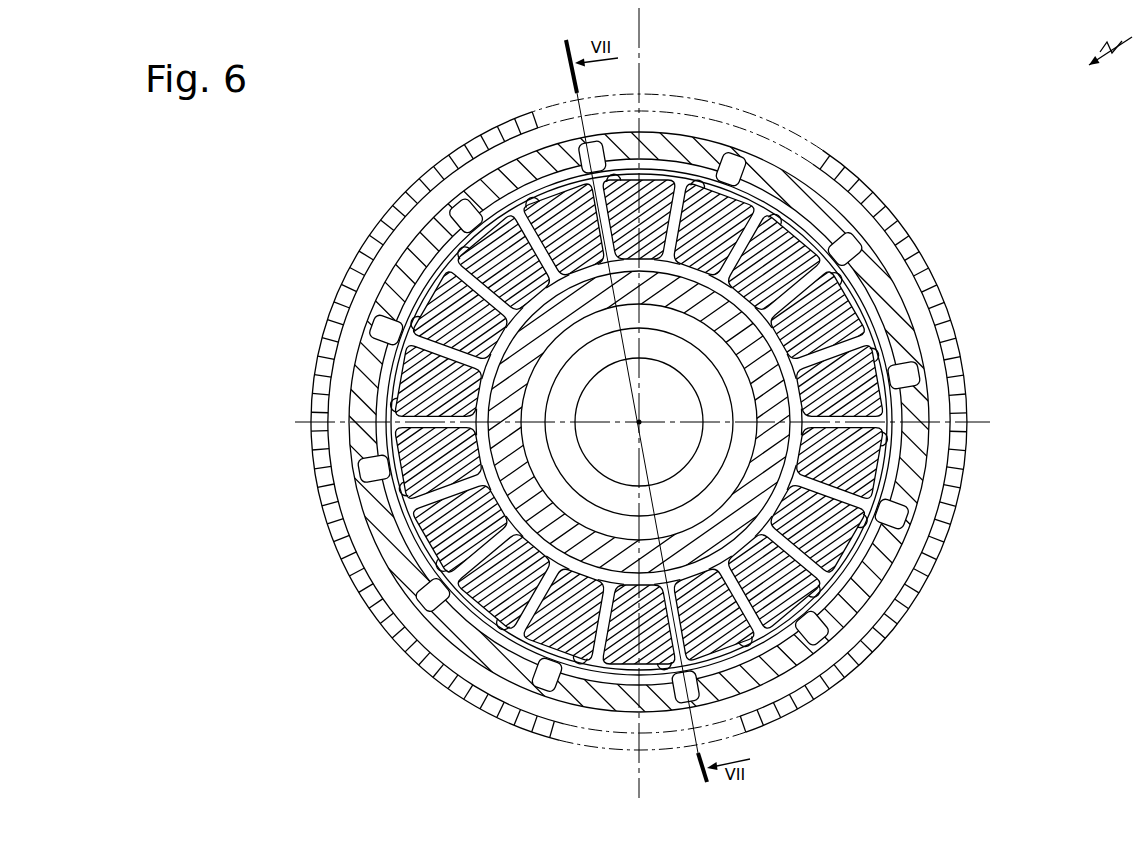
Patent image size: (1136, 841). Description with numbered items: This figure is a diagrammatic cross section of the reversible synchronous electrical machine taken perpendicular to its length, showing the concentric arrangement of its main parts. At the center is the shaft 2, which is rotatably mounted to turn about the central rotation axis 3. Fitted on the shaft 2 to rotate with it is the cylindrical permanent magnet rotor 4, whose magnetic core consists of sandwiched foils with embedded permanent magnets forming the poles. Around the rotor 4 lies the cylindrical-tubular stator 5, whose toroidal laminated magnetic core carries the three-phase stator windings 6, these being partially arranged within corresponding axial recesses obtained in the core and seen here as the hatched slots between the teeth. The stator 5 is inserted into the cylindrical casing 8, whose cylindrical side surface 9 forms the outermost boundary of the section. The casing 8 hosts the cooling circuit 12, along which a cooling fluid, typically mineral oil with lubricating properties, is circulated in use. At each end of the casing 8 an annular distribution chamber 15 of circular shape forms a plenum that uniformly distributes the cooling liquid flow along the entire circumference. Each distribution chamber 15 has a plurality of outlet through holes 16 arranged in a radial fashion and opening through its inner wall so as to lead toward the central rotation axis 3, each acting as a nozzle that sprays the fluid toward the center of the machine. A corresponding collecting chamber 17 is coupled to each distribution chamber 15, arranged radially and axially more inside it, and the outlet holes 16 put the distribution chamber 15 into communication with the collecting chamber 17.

The shaft 2 is at (759, 501).
The central rotation axis 3 is at (639, 365).
The permanent magnet rotor 4 is at (753, 422).
The stator 5 is at (610, 439).
The stator windings 6 is at (608, 375).
The casing 8 is at (639, 369).
The side surface 9 is at (635, 404).
The cooling circuit 12 is at (631, 403).
The distribution chamber 15 is at (639, 422).
The outlet through holes 16 is at (639, 443).
The collecting chamber 17 is at (639, 477).